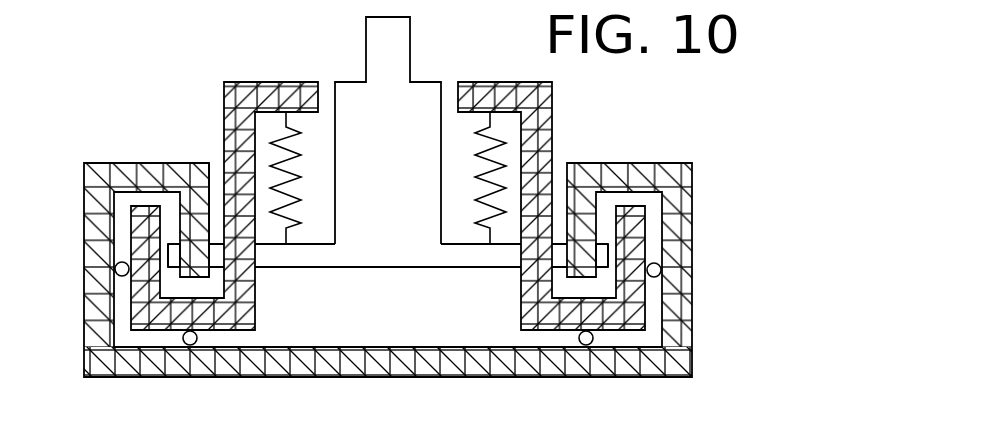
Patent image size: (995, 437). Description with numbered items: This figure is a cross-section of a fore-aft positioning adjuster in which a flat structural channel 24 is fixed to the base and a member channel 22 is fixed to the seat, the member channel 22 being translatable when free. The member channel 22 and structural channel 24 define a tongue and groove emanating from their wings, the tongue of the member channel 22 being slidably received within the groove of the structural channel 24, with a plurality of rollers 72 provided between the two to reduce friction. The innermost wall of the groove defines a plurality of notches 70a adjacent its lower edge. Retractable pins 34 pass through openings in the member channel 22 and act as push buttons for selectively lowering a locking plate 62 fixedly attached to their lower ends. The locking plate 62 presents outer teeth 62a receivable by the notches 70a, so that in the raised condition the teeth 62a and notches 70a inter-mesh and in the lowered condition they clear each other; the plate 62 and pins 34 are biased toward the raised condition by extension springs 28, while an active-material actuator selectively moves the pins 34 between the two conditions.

The member channel 22 is at (553, 121).
The structural channel 24 is at (692, 200).
The spring 28 is at (483, 214).
The retractable pin 34 is at (407, 133).
The locking plate 62 is at (330, 268).
The outer teeth 62a is at (174, 243).
The notches 70a is at (190, 277).
The rollers 72 is at (661, 272).